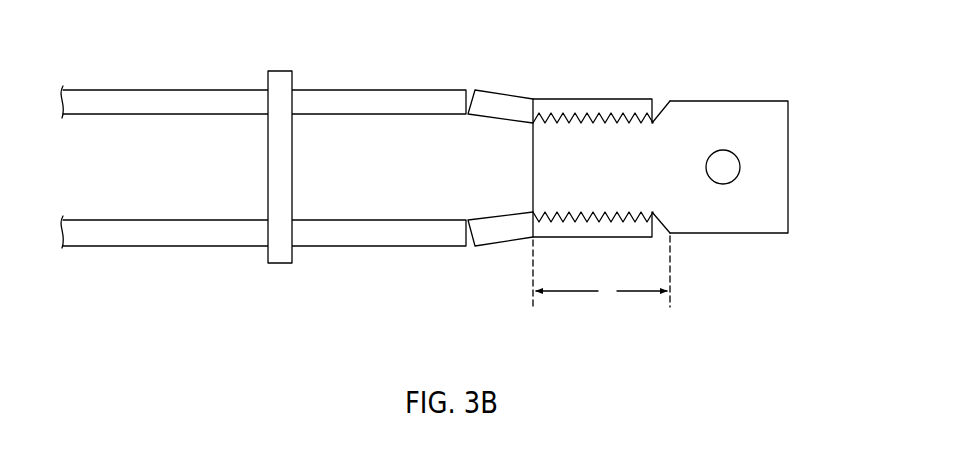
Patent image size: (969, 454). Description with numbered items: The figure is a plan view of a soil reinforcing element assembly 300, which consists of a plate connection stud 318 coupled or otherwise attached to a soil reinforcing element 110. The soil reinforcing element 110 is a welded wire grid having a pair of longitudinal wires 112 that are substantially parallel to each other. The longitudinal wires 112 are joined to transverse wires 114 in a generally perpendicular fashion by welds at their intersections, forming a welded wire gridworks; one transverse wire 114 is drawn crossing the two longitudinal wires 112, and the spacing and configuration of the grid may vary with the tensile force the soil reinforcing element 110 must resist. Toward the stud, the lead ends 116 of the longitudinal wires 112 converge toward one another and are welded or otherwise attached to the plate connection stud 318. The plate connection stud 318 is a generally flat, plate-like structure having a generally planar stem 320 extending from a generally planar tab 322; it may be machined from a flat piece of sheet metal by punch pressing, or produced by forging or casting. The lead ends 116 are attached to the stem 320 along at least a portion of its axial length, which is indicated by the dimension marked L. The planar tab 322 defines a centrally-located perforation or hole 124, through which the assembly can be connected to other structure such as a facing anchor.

The soil reinforcing element assembly 300 is at (499, 44).
The soil reinforcing element 110 is at (184, 84).
The longitudinal wires 112 is at (152, 108).
The transverse wires 114 is at (285, 80).
The lead ends 116 is at (583, 102).
The plate connection stud 318 is at (793, 167).
The planar stem 320 is at (612, 140).
The planar tab 322 is at (728, 110).
The hole 124 is at (727, 180).